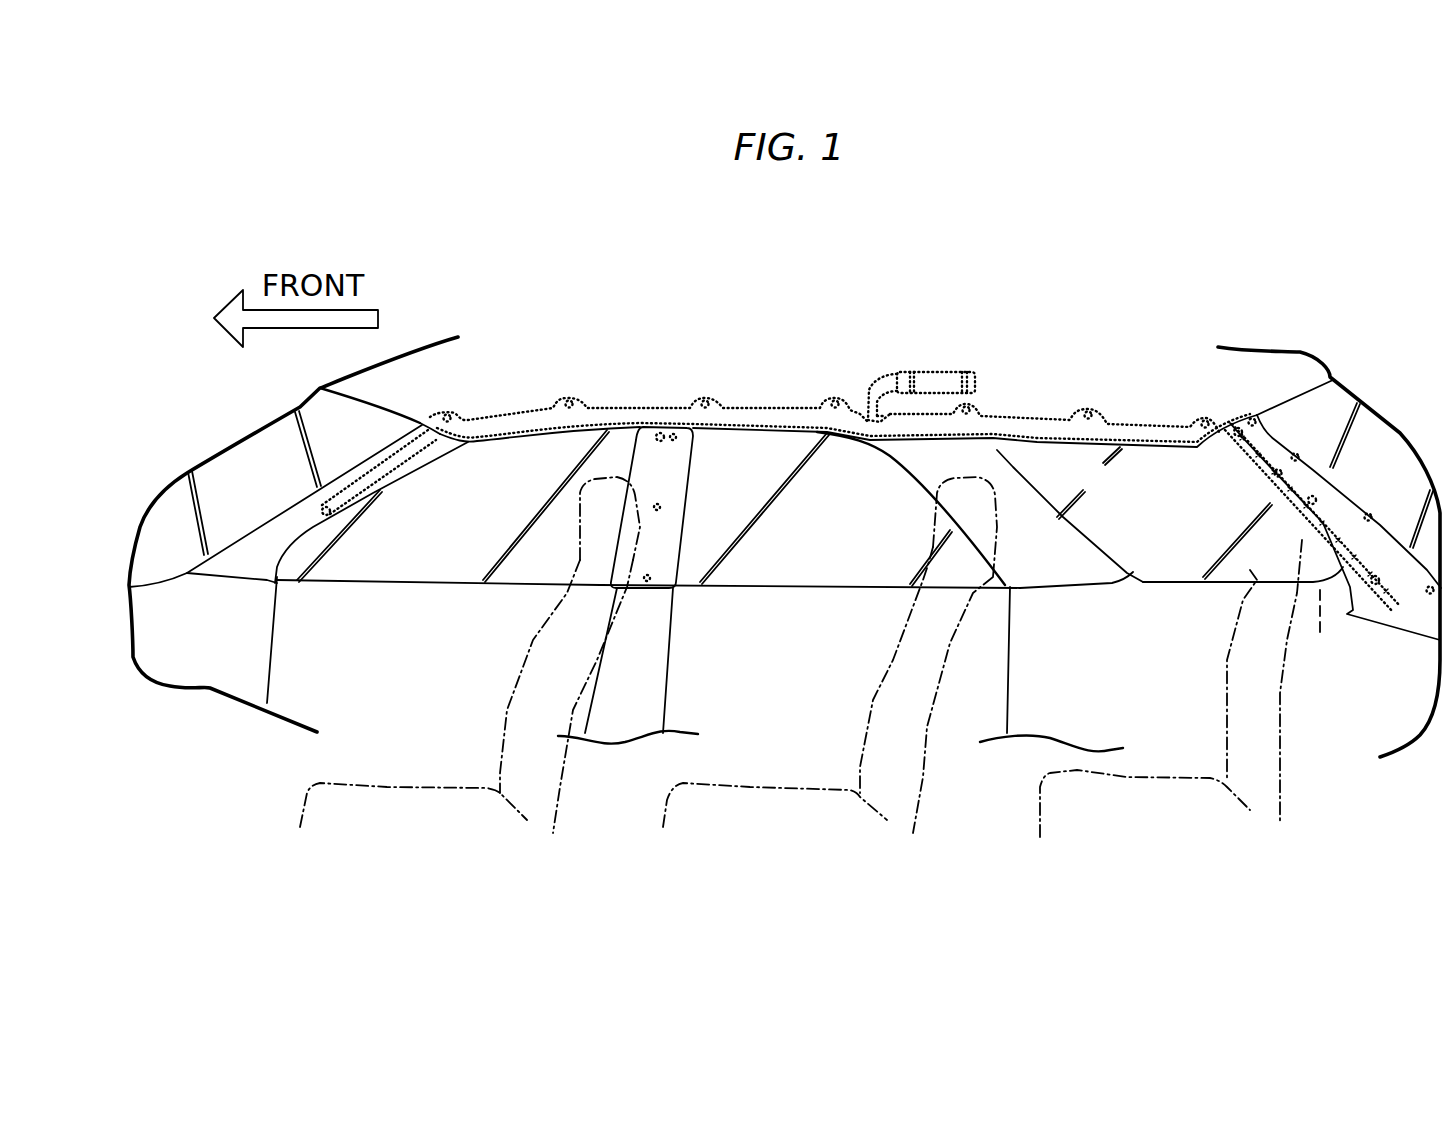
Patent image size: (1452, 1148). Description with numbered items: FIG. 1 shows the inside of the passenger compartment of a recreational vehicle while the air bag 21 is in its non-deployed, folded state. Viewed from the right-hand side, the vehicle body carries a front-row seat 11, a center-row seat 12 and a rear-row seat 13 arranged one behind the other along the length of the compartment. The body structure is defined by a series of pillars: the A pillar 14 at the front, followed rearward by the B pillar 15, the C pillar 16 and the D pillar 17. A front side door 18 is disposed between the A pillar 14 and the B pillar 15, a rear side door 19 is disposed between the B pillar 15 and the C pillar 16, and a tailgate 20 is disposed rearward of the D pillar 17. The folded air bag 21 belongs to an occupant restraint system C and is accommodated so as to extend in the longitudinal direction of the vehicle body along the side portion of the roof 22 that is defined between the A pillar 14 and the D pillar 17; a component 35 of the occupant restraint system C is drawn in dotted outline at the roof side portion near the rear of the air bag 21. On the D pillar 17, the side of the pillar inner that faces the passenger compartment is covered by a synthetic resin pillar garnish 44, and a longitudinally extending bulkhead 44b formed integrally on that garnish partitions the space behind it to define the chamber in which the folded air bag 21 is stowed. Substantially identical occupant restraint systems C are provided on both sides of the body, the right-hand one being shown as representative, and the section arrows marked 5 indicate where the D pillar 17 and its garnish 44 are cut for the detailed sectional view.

The occupant restraint system C is at (1021, 393).
The front-row seat 11 is at (427, 800).
The center-row seat 12 is at (760, 800).
The rear-row seat 13 is at (1140, 797).
The A pillar 14 is at (282, 522).
The B pillar 15 is at (670, 484).
The C pillar 16 is at (947, 477).
The D pillar 17 is at (1234, 468).
The pillar garnish 44 is at (1312, 518).
The bulkhead 44b is at (1322, 631).
The front side door 18 is at (317, 699).
The rear side door 19 is at (703, 689).
The tailgate 20 is at (1390, 447).
The air bag 21 is at (629, 409).
The roof 22 is at (716, 353).
The inflator 35 is at (942, 370).
The section line of FIG. 5 is at (1380, 458).